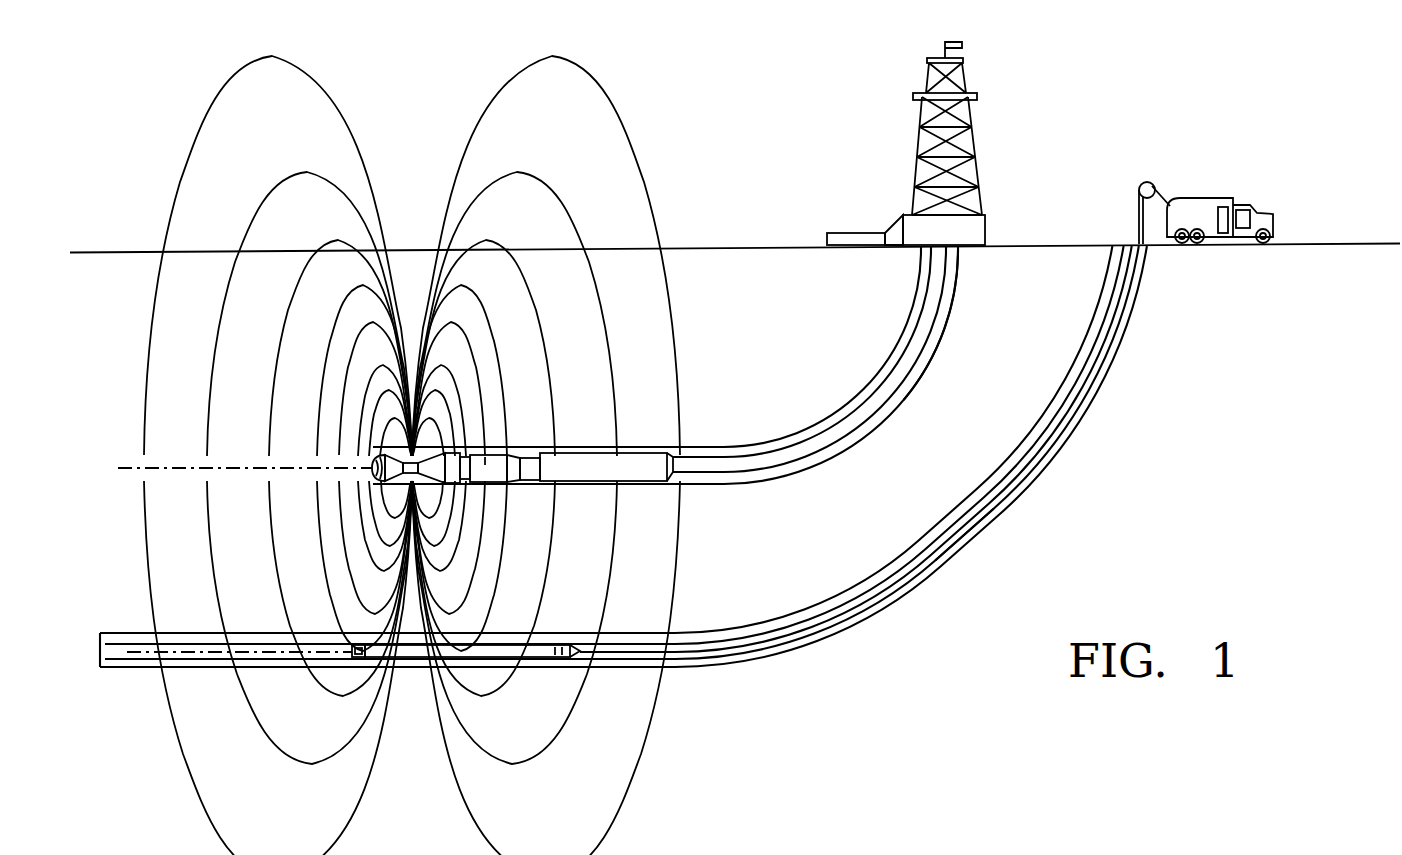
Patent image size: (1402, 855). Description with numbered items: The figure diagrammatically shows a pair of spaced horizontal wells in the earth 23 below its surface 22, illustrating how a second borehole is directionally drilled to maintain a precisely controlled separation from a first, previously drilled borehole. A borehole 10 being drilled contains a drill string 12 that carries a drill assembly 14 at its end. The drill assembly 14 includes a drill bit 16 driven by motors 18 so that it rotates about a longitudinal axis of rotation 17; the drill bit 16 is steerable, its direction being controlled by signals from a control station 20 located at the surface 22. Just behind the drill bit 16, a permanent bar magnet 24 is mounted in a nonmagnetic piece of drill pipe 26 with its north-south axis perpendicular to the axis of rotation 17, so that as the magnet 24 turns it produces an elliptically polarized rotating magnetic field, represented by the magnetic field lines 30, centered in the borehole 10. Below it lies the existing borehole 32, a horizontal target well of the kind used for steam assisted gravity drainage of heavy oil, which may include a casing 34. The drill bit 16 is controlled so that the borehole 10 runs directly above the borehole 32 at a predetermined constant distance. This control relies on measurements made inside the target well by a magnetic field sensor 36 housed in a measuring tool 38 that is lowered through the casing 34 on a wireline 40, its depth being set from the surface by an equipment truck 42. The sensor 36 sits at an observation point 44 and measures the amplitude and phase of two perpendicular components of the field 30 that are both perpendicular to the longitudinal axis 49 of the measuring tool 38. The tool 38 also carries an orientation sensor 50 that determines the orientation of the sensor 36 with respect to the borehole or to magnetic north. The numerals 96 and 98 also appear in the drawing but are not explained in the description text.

The borehole 10 is at (727, 446).
The drill string 12 is at (804, 430).
The drill assembly 14 is at (471, 462).
The drill bit 16 is at (376, 460).
The longitudinal axis of rotation 17 is at (126, 462).
The motors 18 is at (476, 478).
The control station 20 is at (878, 197).
The surface 22 is at (698, 248).
The earth 23 is at (740, 315).
The permanent bar magnet 24 is at (405, 478).
The nonmagnetic piece of drill pipe 26 is at (398, 455).
The magnetic field lines 30 is at (452, 128).
The existing borehole 32 is at (780, 617).
The casing 34 is at (122, 650).
The magnetic field sensor 36 is at (403, 690).
The measuring tool 38 is at (352, 656).
The wireline 40 is at (812, 634).
The equipment truck 42 is at (1213, 195).
The observation point 44 is at (436, 648).
The longitudinal axis of the measuring tool 49 is at (222, 672).
The orientation sensor 50 is at (562, 660).
The build section of wellbore 96 is at (946, 320).
The connector sub 98 is at (666, 440).